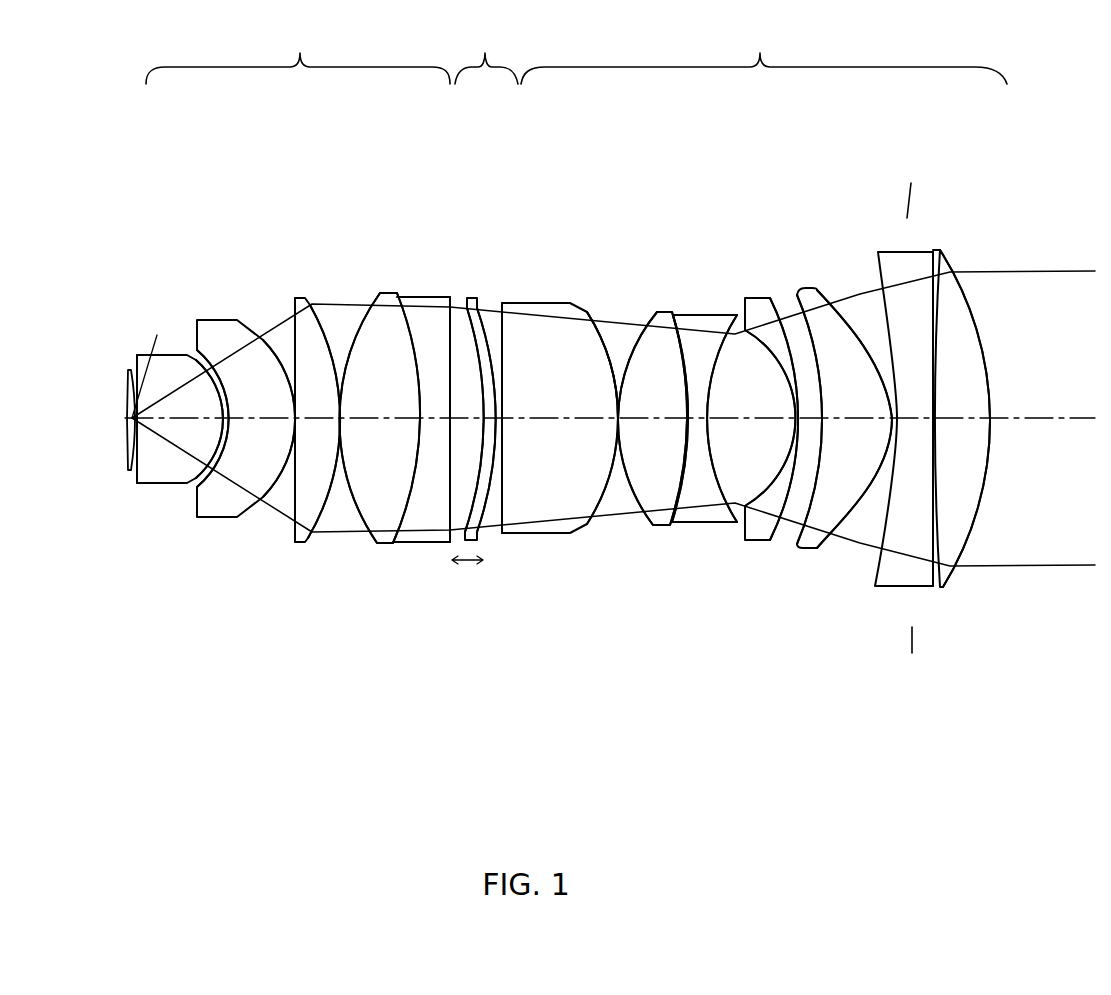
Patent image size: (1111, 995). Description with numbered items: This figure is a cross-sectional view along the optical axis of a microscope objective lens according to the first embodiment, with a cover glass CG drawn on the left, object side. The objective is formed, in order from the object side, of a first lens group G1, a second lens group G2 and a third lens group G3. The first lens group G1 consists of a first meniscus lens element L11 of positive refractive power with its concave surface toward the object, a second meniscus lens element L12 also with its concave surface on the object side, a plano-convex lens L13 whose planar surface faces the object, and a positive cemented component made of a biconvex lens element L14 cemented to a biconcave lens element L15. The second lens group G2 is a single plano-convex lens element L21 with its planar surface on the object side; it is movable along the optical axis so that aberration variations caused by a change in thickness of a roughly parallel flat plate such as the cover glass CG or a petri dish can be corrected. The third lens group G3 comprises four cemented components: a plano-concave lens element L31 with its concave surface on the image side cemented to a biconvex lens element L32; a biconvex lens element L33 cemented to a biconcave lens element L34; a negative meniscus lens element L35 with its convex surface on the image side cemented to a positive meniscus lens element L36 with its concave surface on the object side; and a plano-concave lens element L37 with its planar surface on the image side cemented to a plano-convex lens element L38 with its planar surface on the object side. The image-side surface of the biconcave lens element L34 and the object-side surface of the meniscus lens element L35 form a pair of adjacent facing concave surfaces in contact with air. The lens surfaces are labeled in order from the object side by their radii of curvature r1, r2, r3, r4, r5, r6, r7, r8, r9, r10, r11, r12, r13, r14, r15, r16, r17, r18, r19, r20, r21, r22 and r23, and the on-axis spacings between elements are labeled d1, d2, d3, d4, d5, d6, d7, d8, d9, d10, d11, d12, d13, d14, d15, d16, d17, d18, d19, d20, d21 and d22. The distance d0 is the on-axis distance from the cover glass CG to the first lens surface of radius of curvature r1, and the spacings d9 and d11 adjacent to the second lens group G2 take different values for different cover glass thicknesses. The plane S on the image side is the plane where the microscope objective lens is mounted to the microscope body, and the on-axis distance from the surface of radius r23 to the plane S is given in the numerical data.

The first lens group G1 is at (298, 53).
The second lens group G2 is at (486, 53).
The third lens group G3 is at (764, 53).
The cover glass CG is at (128, 372).
The mounting plane S is at (907, 418).
The first meniscus lens element L11 is at (185, 353).
The second meniscus lens element L12 is at (200, 318).
The plano-convex lens L13 is at (304, 297).
The biconvex lens element L14 is at (386, 292).
The biconcave lens element L15 is at (406, 296).
The plano-convex lens element L21 is at (470, 297).
The plano-concave lens element L31 is at (530, 303).
The biconvex lens element L32 is at (590, 310).
The biconvex lens element L33 is at (667, 310).
The biconcave lens element L34 is at (705, 314).
The negative meniscus lens element L35 is at (772, 296).
The positive meniscus lens element L36 is at (808, 290).
The plano-concave lens element L37 is at (882, 251).
The plano-convex lens element L38 is at (942, 249).
The radius of curvature of first lens surface r1 is at (162, 363).
The radius of curvature of second lens surface r2 is at (197, 330).
The radius of curvature of third lens surface r3 is at (243, 318).
The radius of curvature of fourth lens surface r4 is at (262, 338).
The radius of curvature of fifth lens surface r5 is at (290, 296).
The radius of curvature of sixth lens surface r6 is at (321, 360).
The radius of curvature of seventh lens surface r7 is at (343, 365).
The radius of curvature of eighth lens surface r8 is at (387, 292).
The radius of curvature of ninth lens surface r9 is at (428, 296).
The radius of curvature of tenth lens surface r10 is at (457, 320).
The radius of curvature of eleventh lens surface r11 is at (503, 300).
The radius of curvature of twelfth lens surface r12 is at (503, 300).
The radius of curvature of thirteenth lens surface r13 is at (557, 303).
The radius of curvature of fourteenth lens surface r14 is at (607, 330).
The radius of curvature of fifteenth lens surface r15 is at (642, 311).
The radius of curvature of sixteenth lens surface r16 is at (693, 313).
The radius of curvature of seventeenth lens surface r17 is at (723, 314).
The radius of curvature of eighteenth lens surface r18 is at (769, 297).
The radius of curvature of nineteenth lens surface r19 is at (801, 289).
The radius of curvature of twentieth lens surface r20 is at (850, 300).
The radius of curvature of twenty-first lens surface r21 is at (867, 295).
The radius of curvature of twenty-second lens surface r22 is at (936, 251).
The radius of curvature of last lens surface r23 is at (963, 272).
The cover glass to first surface distance d0 is at (131, 472).
The on-axis spacing d1 is at (166, 485).
The on-axis spacing d2 is at (213, 519).
The on-axis spacing d3 is at (258, 500).
The on-axis spacing d4 is at (290, 500).
The on-axis spacing d5 is at (314, 544).
The on-axis spacing d6 is at (341, 422).
The on-axis spacing d7 is at (380, 420).
The on-axis spacing d8 is at (411, 544).
The on-axis spacing d9 is at (432, 420).
The on-axis spacing d10 is at (480, 422).
The on-axis spacing d11 is at (502, 535).
The on-axis spacing d12 is at (533, 535).
The on-axis spacing d13 is at (578, 530).
The on-axis spacing d14 is at (620, 422).
The on-axis spacing d15 is at (662, 527).
The on-axis spacing d16 is at (700, 422).
The on-axis spacing d17 is at (733, 420).
The on-axis spacing d18 is at (764, 542).
The on-axis spacing d19 is at (817, 422).
The on-axis spacing d20 is at (853, 422).
The on-axis spacing d21 is at (899, 422).
The on-axis spacing d22 is at (910, 655).